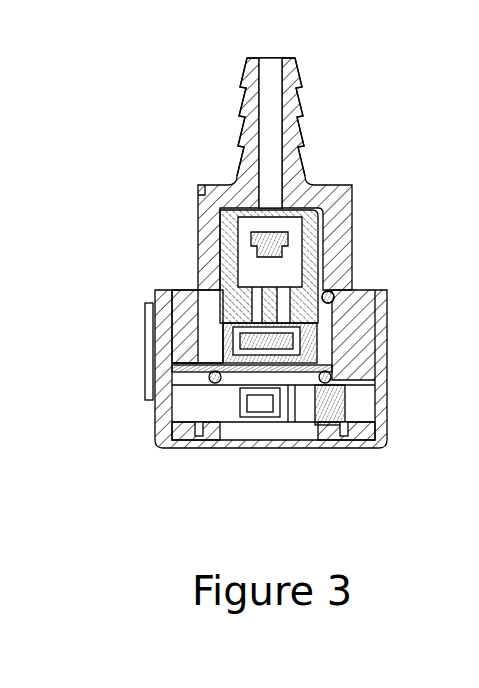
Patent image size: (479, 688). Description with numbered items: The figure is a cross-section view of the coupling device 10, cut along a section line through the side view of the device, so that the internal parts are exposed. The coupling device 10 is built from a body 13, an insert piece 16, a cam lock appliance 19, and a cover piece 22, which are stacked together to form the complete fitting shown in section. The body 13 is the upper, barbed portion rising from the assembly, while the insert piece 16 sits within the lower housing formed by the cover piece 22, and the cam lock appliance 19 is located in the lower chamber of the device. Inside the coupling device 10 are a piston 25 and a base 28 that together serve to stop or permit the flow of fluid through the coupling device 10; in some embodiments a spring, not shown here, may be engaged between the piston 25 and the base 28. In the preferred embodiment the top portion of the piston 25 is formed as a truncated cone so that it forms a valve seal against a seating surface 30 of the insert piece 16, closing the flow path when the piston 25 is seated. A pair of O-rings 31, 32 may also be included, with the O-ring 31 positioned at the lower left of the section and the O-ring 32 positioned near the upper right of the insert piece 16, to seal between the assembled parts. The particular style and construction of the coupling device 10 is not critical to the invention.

The coupling device 10 is at (172, 145).
The body 13 is at (292, 173).
The base 28 is at (280, 221).
The seating surface 30 is at (242, 335).
The O-ring 32 is at (335, 292).
The piston 25 is at (287, 337).
The insert piece 16 is at (213, 320).
The O-ring 31 is at (209, 374).
The cover piece 22 is at (155, 417).
The cam lock appliance 19 is at (205, 407).